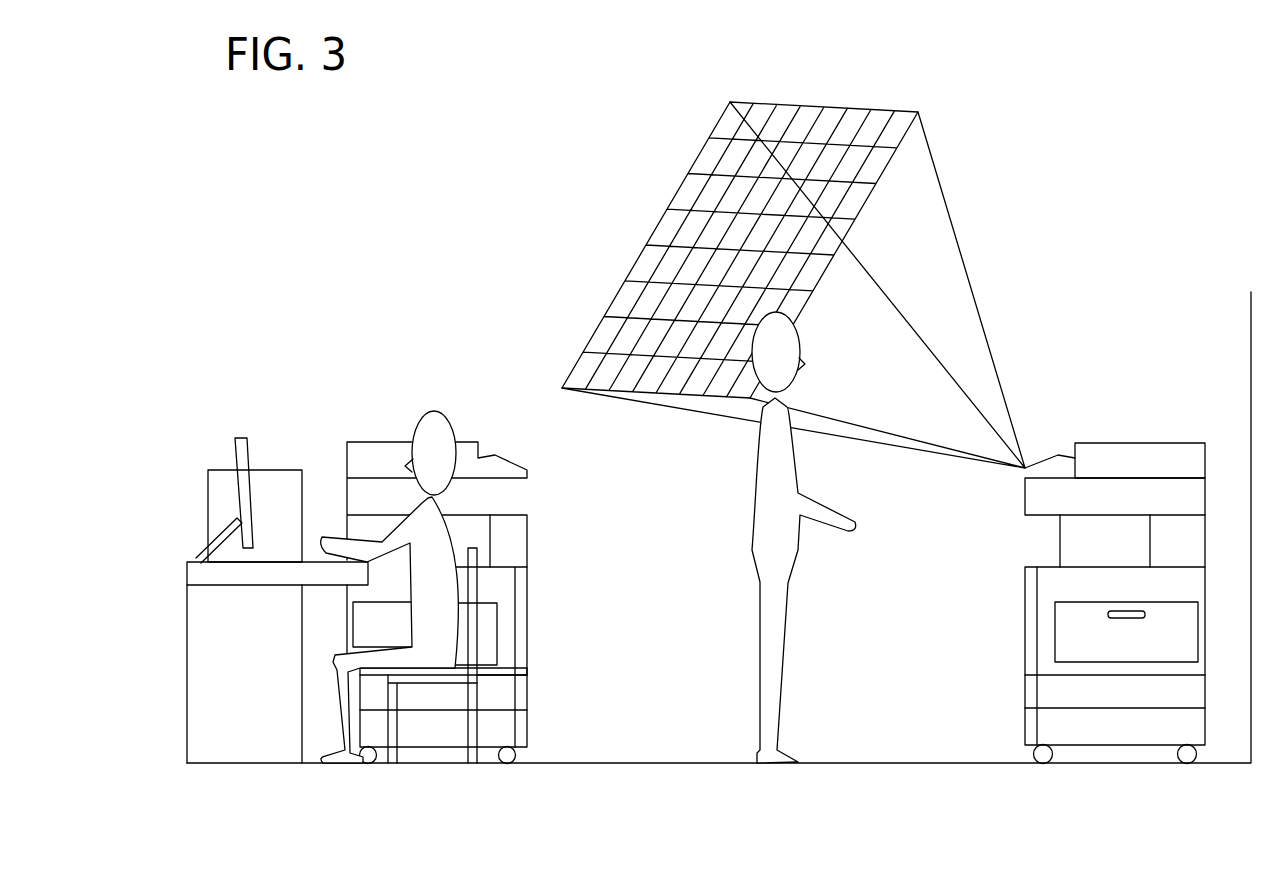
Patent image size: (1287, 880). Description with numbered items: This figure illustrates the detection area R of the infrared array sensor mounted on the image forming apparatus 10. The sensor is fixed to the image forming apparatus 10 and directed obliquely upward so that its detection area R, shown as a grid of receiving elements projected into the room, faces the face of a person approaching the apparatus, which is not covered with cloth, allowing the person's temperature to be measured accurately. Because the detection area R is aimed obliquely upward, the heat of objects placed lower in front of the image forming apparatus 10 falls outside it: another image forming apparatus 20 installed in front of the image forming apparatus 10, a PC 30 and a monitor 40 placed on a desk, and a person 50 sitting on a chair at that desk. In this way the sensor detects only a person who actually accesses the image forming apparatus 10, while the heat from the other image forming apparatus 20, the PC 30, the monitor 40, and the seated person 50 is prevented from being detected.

The image forming apparatus 10 is at (1128, 452).
The another image forming apparatus 20 is at (370, 453).
The PC 30 is at (288, 468).
The monitor 40 is at (238, 436).
The person sitting on a chair 50 is at (452, 412).
The detection area R is at (657, 228).